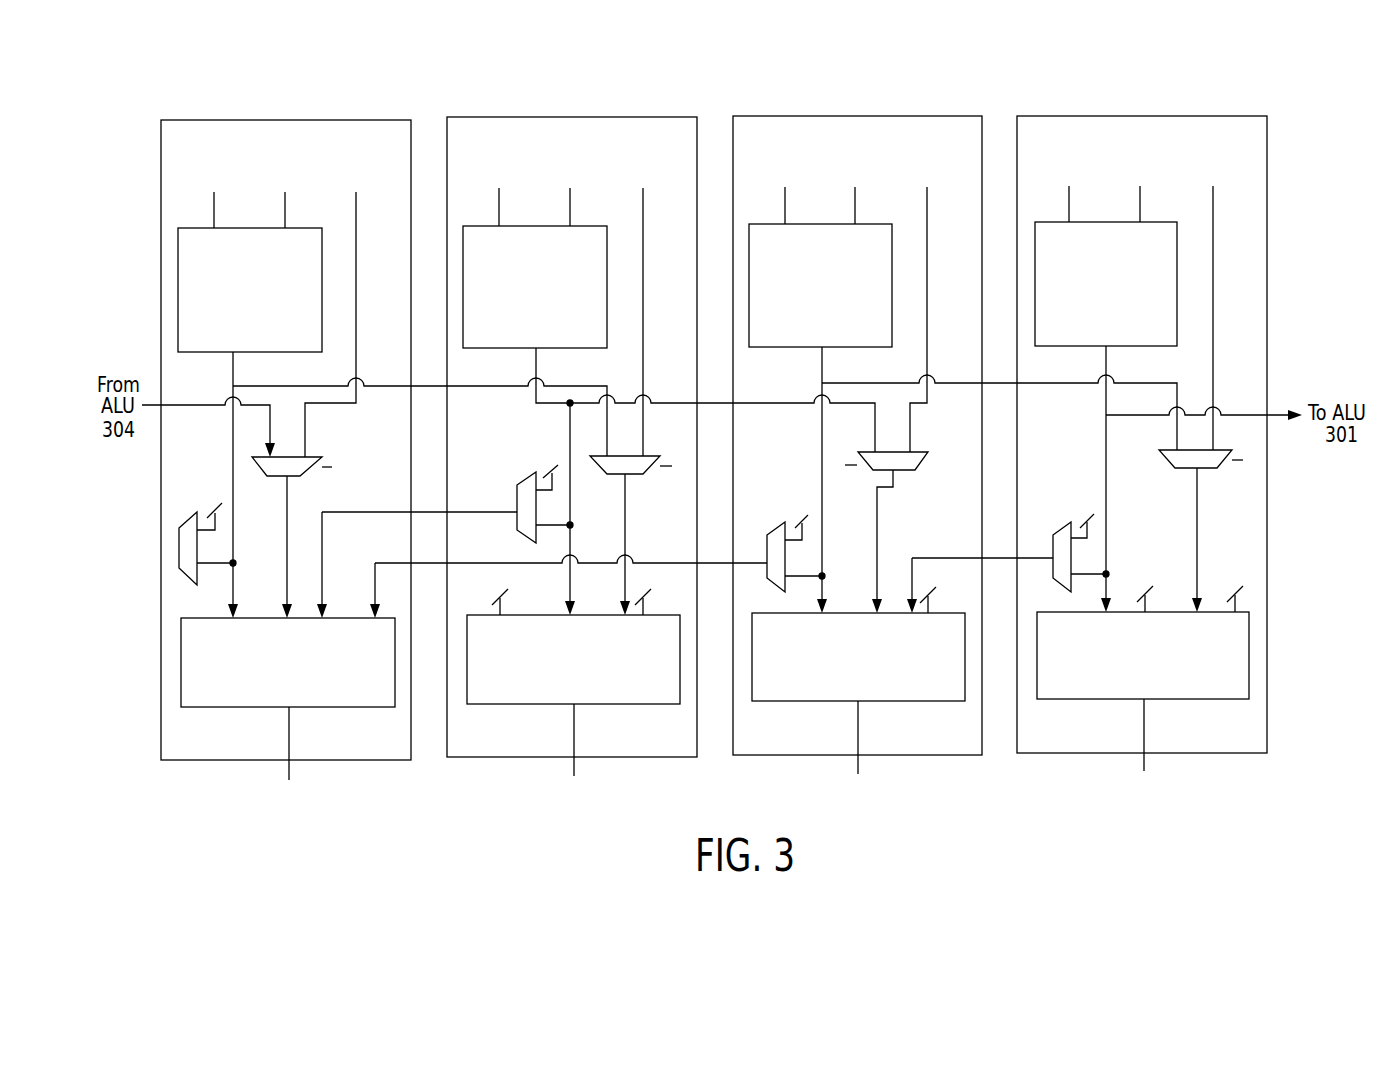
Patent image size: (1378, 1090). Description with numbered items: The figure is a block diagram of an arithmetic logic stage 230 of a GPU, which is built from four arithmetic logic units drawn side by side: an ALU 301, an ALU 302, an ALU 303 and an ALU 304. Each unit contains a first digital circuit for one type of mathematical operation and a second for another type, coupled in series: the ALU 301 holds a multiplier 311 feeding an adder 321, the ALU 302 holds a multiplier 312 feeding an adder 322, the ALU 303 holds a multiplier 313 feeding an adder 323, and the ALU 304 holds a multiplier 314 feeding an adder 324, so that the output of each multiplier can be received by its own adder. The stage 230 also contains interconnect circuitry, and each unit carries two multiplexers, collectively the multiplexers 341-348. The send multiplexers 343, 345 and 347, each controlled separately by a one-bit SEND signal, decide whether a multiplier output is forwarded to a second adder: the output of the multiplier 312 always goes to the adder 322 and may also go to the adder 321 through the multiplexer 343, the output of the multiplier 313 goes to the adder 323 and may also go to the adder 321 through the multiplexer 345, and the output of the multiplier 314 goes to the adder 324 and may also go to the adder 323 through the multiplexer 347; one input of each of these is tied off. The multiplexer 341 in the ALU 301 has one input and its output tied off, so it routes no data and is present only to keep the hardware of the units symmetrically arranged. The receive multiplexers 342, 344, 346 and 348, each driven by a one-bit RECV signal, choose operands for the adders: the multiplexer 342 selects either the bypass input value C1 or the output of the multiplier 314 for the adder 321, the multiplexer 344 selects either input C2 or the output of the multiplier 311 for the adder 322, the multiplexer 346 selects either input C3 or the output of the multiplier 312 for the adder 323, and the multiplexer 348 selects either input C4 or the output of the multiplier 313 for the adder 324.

The arithmetic logic stage 230 is at (161, 93).
The ALU 301 is at (355, 160).
The ALU 302 is at (640, 159).
The ALU 303 is at (925, 158).
The ALU 304 is at (1210, 157).
The multiplier 311 is at (235, 333).
The multiplier 312 is at (520, 331).
The multiplier 313 is at (805, 329).
The multiplier 314 is at (1091, 327).
The adder 321 is at (273, 685).
The adder 322 is at (558, 682).
The adder 323 is at (843, 680).
The adder 324 is at (1128, 678).
The multiplexer 341 is at (215, 470).
The multiplexer 342 is at (365, 450).
The multiplexer 343 is at (538, 438).
The multiplexer 344 is at (647, 475).
The multiplexer 345 is at (788, 486).
The multiplexer 346 is at (915, 472).
The multiplexer 347 is at (1072, 485).
The multiplexer 348 is at (1217, 470).